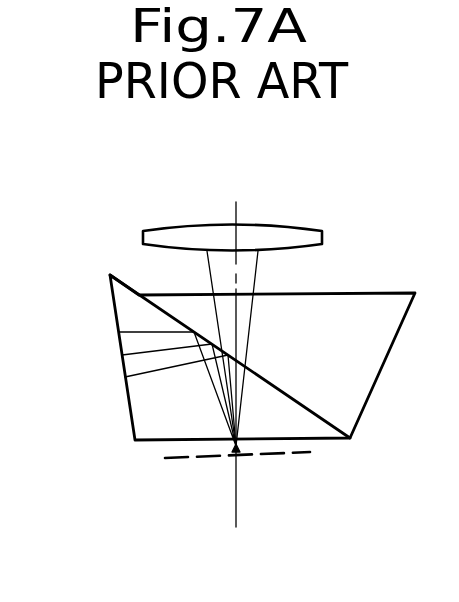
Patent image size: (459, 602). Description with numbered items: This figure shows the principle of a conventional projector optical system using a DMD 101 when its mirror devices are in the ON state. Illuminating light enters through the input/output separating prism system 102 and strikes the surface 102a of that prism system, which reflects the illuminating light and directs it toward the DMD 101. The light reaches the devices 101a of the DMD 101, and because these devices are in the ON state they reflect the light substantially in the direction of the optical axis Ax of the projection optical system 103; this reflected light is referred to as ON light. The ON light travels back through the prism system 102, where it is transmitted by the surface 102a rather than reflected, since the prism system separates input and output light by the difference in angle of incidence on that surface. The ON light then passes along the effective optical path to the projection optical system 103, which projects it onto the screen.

The projection optical system 103 is at (172, 235).
The optical axis Ax is at (237, 210).
The input/output separating prism system 102 is at (119, 388).
The surface 102a is at (134, 297).
The DMD 101 is at (324, 452).
The devices 101a is at (232, 460).